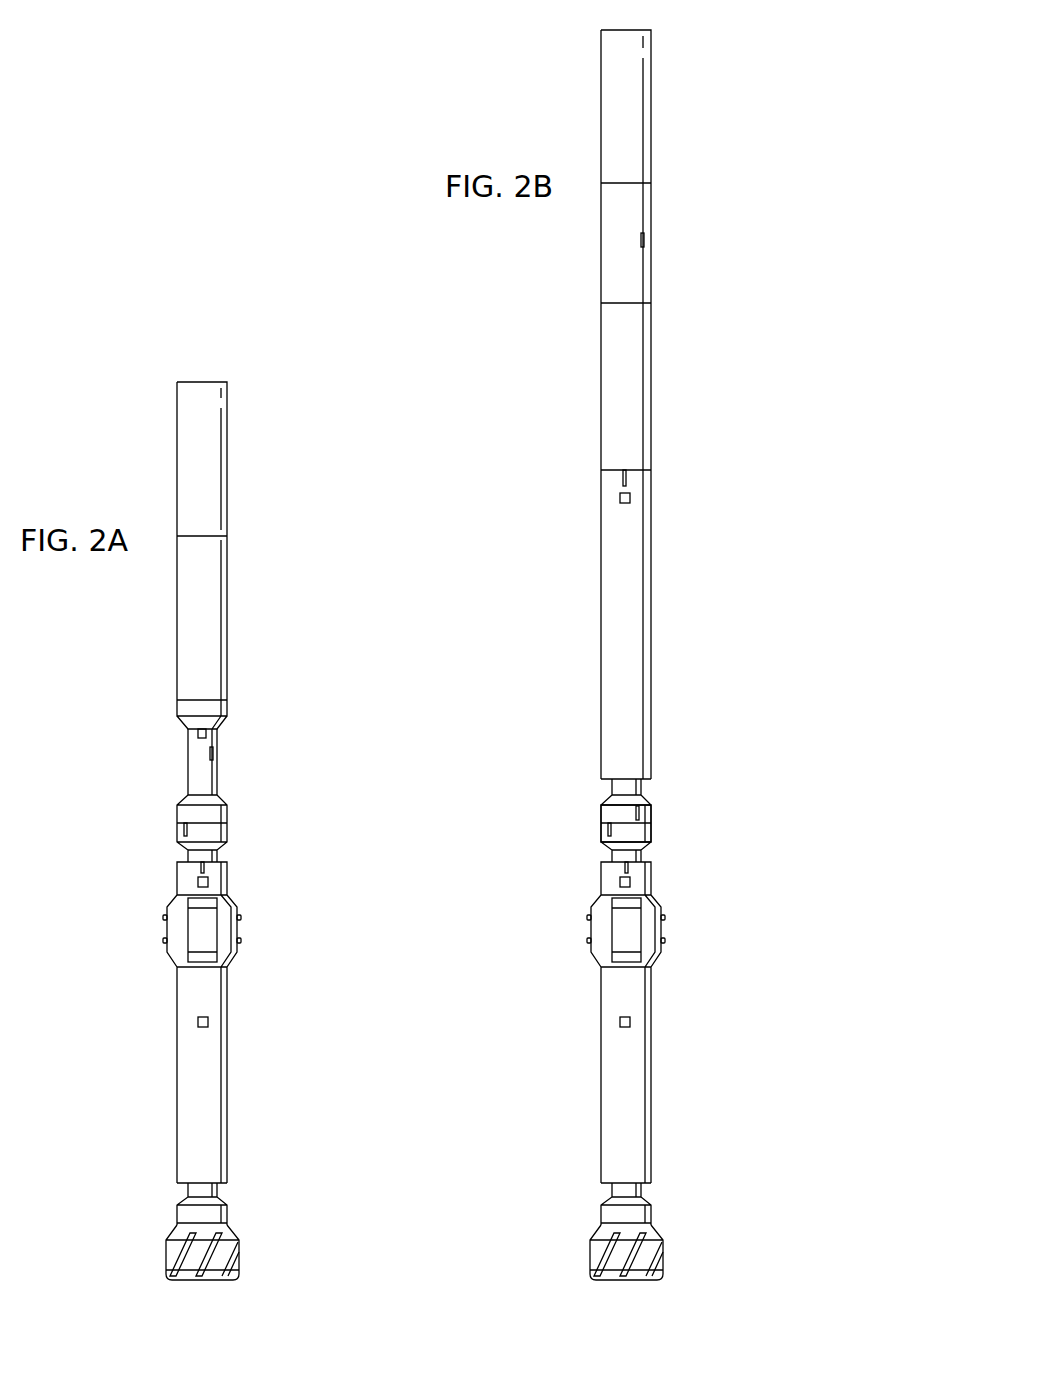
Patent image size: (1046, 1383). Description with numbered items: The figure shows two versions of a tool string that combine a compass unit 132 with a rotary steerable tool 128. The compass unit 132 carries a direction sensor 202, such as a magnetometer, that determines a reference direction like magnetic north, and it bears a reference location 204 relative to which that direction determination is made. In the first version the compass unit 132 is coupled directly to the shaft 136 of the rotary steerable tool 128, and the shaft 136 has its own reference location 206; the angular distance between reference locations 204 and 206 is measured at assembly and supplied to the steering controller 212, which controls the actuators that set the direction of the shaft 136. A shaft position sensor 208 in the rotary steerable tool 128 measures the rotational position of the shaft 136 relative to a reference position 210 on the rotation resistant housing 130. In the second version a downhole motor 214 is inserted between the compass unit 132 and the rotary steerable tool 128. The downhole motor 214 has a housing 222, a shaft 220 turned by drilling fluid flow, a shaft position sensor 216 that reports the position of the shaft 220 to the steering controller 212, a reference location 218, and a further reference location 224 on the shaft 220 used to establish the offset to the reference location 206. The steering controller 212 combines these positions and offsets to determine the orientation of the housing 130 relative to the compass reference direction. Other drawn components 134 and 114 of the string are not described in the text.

In FIG. 2A, the drill bit 114 is at (240, 1252).
In FIG. 2B, the drill bit 114 is at (664, 1252).
In FIG. 2A, the rotary steerable tool 128 is at (238, 987).
In FIG. 2B, the rotary steerable tool 128 is at (662, 987).
In FIG. 2A, the rotation resistant housing 130 is at (238, 1080).
In FIG. 2B, the rotation resistant housing 130 is at (662, 1080).
In FIG. 2A, the compass unit 132 is at (237, 703).
In FIG. 2B, the compass unit 132 is at (662, 204).
In FIG. 2A, the drill pipe section 134 is at (228, 620).
In FIG. 2B, the drill pipe section 134 is at (652, 385).
In FIG. 2A, the shaft 136 is at (228, 835).
In FIG. 2B, the shaft 136 is at (652, 830).
In FIG. 2A, the direction sensor 202 is at (197, 735).
In FIG. 2A, the reference location 204 is at (208, 752).
In FIG. 2B, the reference location 204 is at (641, 240).
In FIG. 2A, the reference location 206 is at (185, 830).
In FIG. 2B, the reference location 206 is at (608, 830).
In FIG. 2A, the shaft position sensor 208 is at (197, 882).
In FIG. 2B, the shaft position sensor 208 is at (632, 882).
In FIG. 2A, the reference position 210 is at (205, 867).
In FIG. 2B, the reference position 210 is at (623, 868).
In FIG. 2A, the steering controller 212 is at (197, 1022).
In FIG. 2B, the steering controller 212 is at (620, 1022).
In FIG. 2B, the downhole motor 214 is at (652, 595).
In FIG. 2B, the shaft position sensor 216 is at (632, 497).
In FIG. 2B, the reference location 218 is at (622, 483).
In FIG. 2B, the shaft 220 is at (655, 794).
In FIG. 2B, the housing 222 is at (662, 644).
In FIG. 2B, the reference location 224 is at (634, 812).